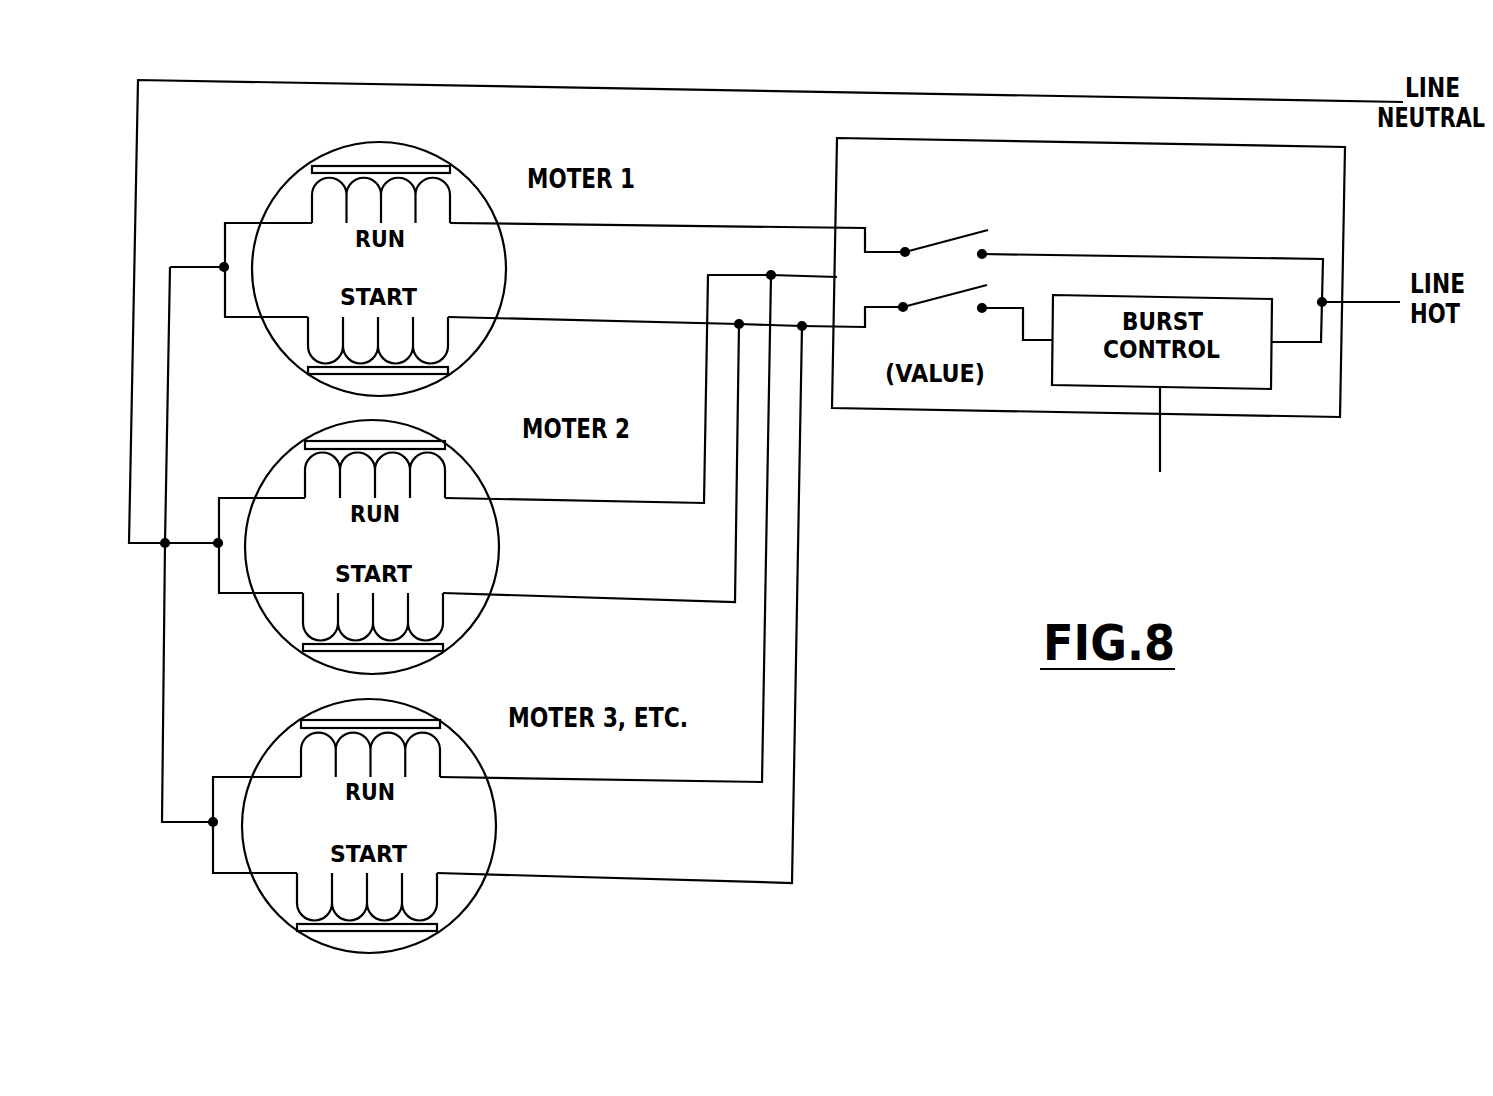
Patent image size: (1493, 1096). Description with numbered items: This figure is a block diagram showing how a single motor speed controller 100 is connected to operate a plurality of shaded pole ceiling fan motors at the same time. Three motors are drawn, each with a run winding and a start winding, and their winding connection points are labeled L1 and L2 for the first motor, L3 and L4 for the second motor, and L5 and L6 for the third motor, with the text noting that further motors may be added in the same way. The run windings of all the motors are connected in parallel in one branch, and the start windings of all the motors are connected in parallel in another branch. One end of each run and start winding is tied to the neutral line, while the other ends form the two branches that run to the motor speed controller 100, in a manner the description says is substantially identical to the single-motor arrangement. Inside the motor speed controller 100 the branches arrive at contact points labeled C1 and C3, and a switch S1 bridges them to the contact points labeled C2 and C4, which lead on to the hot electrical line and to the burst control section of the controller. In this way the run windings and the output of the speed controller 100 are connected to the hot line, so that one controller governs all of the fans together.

The run winding lead of motor 1 L1 is at (381, 138).
The start winding lead of motor 1 L2 is at (342, 390).
The run winding lead of motor 2 L3 is at (392, 422).
The start winding lead of motor 2 L4 is at (330, 667).
The run winding lead of motor 3 L5 is at (388, 697).
The start winding lead of motor 3 L6 is at (432, 932).
The switch contact C1 is at (893, 237).
The switch contact C2 is at (1006, 241).
The switch contact C3 is at (891, 324).
The switch contact C4 is at (980, 323).
The switch S1 is at (945, 259).
The motor speed controller 100 is at (1010, 410).